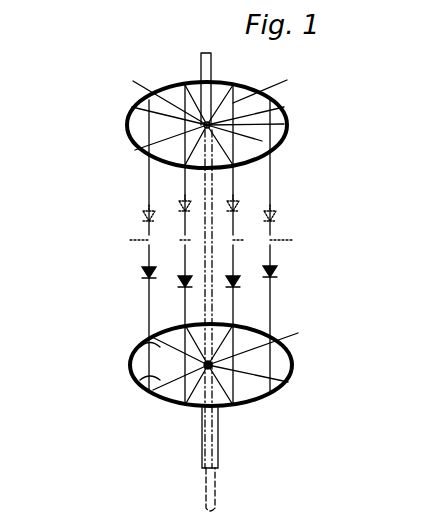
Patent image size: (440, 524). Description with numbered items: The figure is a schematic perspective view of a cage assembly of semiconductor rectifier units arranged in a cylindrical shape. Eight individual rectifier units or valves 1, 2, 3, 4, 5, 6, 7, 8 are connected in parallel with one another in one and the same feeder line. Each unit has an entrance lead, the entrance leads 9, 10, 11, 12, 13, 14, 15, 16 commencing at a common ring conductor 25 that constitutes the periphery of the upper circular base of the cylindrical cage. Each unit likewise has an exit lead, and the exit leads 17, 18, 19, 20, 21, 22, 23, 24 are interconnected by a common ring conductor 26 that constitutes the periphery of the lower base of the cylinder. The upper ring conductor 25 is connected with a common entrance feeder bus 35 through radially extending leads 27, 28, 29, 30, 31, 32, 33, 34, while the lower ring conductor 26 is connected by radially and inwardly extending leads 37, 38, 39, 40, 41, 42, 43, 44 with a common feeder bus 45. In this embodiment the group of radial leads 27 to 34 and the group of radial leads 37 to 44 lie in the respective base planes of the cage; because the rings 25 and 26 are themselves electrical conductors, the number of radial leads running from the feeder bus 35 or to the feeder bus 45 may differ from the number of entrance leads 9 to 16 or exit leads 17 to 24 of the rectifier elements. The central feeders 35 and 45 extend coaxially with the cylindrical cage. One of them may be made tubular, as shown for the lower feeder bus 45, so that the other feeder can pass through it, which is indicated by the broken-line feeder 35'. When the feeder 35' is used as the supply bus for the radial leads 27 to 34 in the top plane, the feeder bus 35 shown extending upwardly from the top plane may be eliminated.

The rectifier unit 1 is at (157, 276).
The rectifier unit 2 is at (192, 279).
The rectifier unit 3 is at (239, 279).
The rectifier unit 4 is at (277, 269).
The rectifier unit 5 is at (278, 219).
The rectifier unit 6 is at (240, 208).
The rectifier unit 7 is at (191, 208).
The rectifier unit 8 is at (155, 218).
The entrance lead 9 is at (149, 182).
The entrance lead 10 is at (184, 181).
The entrance lead 11 is at (234, 178).
The entrance lead 12 is at (270, 192).
The entrance lead 13 is at (284, 124).
The entrance lead 14 is at (270, 82).
The entrance lead 15 is at (165, 93).
The entrance lead 16 is at (140, 126).
The exit lead 17 is at (149, 292).
The exit lead 18 is at (186, 306).
The exit lead 19 is at (234, 306).
The exit lead 20 is at (271, 292).
The exit lead 21 is at (295, 243).
The exit lead 22 is at (250, 243).
The exit lead 23 is at (175, 243).
The exit lead 24 is at (128, 243).
The ring conductor 25 is at (127, 123).
The ring conductor 26 is at (131, 361).
The radial lead 27 is at (142, 141).
The radial lead 28 is at (158, 160).
The radial lead 29 is at (272, 157).
The radial lead 30 is at (262, 141).
The radial lead 31 is at (284, 107).
The radial lead 32 is at (238, 93).
The radial lead 33 is at (192, 100).
The radial lead 34 is at (134, 107).
The entrance feeder bus 35 is at (187, 72).
The feeder 35' is at (242, 320).
The radial lead 37 is at (136, 380).
The radial lead 38 is at (189, 408).
The radial lead 39 is at (220, 395).
The radial lead 40 is at (262, 390).
The radial lead 41 is at (266, 343).
The radial lead 42 is at (262, 336).
The radial lead 43 is at (180, 338).
The radial lead 44 is at (143, 346).
The feeder bus 45 is at (203, 445).